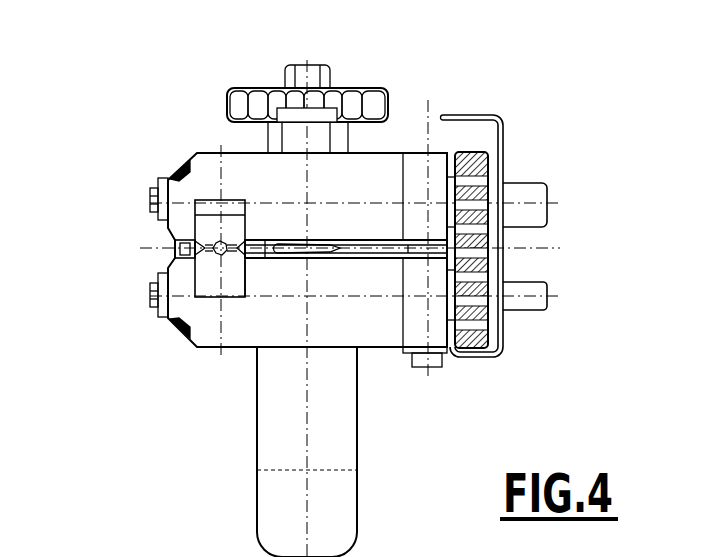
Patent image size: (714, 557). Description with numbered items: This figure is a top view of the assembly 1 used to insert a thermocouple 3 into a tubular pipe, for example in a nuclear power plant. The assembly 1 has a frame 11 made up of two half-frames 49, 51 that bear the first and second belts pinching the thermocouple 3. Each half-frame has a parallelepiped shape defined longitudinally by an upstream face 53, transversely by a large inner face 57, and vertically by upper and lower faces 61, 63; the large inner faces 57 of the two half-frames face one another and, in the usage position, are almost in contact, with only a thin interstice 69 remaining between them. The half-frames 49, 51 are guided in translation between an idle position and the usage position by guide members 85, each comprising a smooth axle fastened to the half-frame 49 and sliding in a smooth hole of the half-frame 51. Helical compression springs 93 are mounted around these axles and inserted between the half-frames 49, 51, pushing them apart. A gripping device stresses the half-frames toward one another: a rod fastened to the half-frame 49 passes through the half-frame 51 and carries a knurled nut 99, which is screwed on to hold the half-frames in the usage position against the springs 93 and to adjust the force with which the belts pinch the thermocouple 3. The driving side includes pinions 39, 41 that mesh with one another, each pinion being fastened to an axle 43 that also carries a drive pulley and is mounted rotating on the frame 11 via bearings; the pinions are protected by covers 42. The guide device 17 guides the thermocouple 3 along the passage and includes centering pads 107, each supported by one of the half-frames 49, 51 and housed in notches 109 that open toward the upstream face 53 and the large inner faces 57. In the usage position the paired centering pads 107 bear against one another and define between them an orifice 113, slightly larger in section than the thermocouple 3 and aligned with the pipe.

The assembly 1 is at (110, 86).
The thermocouple 3 is at (178, 246).
The frame 11 is at (165, 356).
The guide device 17 is at (201, 186).
The pinion 39 is at (478, 352).
The pinion 41 is at (469, 147).
The cover 42 is at (505, 140).
The axle 43 is at (546, 222).
The half-frame 49 is at (232, 348).
The half-frame 51 is at (212, 158).
The upstream face 53 is at (407, 262).
The large inner face 57 is at (378, 250).
The upper face 61 is at (446, 360).
The lower face 63 is at (150, 198).
The interstice 69 is at (416, 234).
The guide member 85 is at (326, 80).
The helical compression spring 93 is at (292, 244).
The knurled nut 99 is at (252, 94).
The centering pad 107 is at (230, 222).
The notch 109 is at (246, 284).
The orifice 113 is at (220, 255).